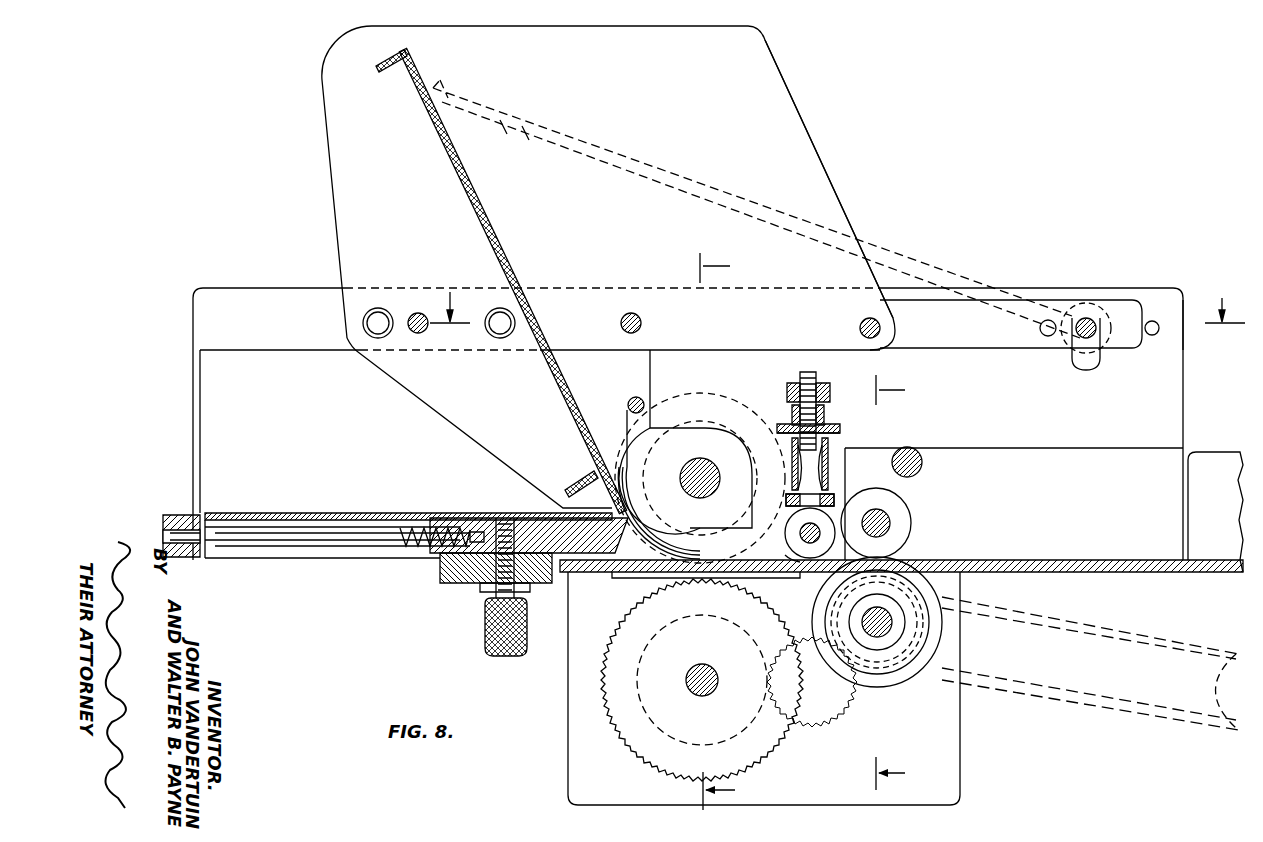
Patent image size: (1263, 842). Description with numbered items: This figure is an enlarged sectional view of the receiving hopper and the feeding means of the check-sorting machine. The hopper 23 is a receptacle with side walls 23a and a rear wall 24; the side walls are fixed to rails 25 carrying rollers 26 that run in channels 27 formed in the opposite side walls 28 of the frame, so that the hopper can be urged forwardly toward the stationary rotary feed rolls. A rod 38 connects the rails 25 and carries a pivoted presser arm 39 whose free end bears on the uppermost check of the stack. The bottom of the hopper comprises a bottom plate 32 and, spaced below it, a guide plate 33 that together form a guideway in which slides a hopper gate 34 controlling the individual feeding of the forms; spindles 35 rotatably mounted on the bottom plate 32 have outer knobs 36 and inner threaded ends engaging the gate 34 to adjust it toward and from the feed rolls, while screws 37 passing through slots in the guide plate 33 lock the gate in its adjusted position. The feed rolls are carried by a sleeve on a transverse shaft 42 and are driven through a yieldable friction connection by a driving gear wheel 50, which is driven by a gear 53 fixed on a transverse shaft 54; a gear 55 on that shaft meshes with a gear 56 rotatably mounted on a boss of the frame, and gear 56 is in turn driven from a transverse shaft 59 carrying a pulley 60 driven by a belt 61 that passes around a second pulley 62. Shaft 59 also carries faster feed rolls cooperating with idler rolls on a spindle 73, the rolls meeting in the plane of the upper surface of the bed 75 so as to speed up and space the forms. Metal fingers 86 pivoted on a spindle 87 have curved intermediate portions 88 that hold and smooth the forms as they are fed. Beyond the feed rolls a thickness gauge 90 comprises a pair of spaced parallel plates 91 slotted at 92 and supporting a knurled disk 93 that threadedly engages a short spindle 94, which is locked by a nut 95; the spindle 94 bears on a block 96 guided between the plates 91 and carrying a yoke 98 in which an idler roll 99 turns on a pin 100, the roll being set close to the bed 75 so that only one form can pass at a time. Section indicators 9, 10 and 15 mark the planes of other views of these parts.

The hopper 23 is at (325, 195).
The side walls 23a is at (803, 172).
The rear wall 24 is at (490, 242).
The rails 25 is at (1015, 340).
The rollers 26 is at (1109, 313).
The channels 27 is at (1175, 326).
The side walls of the frame 28 is at (1160, 412).
The bottom plate 32 is at (345, 516).
The guide plate 33 is at (461, 576).
The hopper gate 34 is at (478, 519).
The spindles 35 is at (361, 544).
The knobs 36 is at (186, 514).
The screws 37 is at (486, 631).
The rod 38 is at (1085, 320).
The presser arm 39 is at (930, 264).
The shaft 42 is at (714, 486).
The driving gear wheel 50 is at (645, 576).
The gear 53 is at (630, 728).
The transverse shaft 54 is at (705, 680).
The gear 55 is at (738, 724).
The gear 56 is at (838, 709).
The transverse shaft 59 is at (861, 626).
The pulley 60 is at (940, 623).
The belt 61 is at (1063, 700).
The pulley 62 is at (1198, 690).
The spindle 73 is at (890, 520).
The bed 75 is at (1070, 565).
The metal fingers 86 is at (716, 542).
The spindle 87 is at (633, 401).
The intermediate portions 88 is at (656, 513).
The thickness gauge 90 is at (817, 430).
The spaced parallel plates 91 is at (790, 410).
The slots 92 is at (836, 433).
The knurled disk 93 is at (835, 427).
The short spindle 94 is at (803, 381).
The nut 95 is at (790, 393).
The block 96 is at (818, 459).
The yoke 98 is at (832, 501).
The idler roll 99 is at (802, 560).
The pin 100 is at (812, 531).
The section line 9 is at (726, 531).
The section line 10 is at (906, 582).
The section line 15 is at (837, 295).